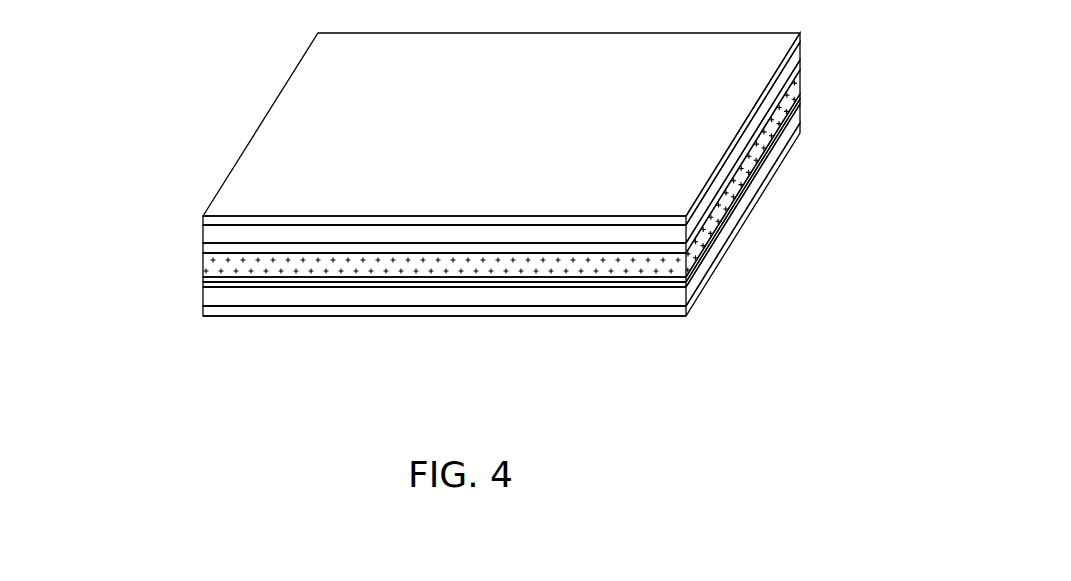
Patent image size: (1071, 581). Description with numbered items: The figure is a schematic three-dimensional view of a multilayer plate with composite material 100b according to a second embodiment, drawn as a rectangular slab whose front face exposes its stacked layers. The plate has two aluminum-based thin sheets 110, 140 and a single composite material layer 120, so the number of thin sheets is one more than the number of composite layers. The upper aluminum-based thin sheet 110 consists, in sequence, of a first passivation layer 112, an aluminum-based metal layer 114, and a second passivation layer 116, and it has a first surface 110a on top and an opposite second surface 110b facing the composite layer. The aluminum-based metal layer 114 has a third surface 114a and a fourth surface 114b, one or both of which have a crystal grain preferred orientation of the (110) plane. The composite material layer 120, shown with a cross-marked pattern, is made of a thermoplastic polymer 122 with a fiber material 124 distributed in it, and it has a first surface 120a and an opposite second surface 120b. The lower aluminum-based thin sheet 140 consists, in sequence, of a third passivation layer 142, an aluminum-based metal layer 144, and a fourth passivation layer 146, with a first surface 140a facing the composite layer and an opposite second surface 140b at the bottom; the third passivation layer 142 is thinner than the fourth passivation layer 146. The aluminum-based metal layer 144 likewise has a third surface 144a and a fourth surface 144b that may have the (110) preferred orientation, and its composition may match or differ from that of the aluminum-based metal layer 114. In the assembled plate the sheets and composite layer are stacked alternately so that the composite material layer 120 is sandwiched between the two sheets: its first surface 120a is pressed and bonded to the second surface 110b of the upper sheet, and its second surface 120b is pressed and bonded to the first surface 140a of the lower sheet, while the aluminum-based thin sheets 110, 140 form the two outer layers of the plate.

The multilayer plate with composite material 100b is at (240, 38).
The aluminum-based thin sheet 110 is at (110, 117).
The first surface 110a is at (300, 216).
The second surface 110b is at (264, 253).
The first passivation layer 112 is at (270, 222).
The aluminum-based metal layer 114 is at (252, 235).
The third surface 114a is at (385, 225).
The fourth surface 114b is at (335, 243).
The second passivation layer 116 is at (240, 248).
The composite material layer 120 is at (110, 218).
The first surface 120a is at (668, 253).
The second surface 120b is at (660, 282).
The thermoplastic polymer 122 is at (207, 258).
The fiber material 124 is at (207, 279).
The aluminum-based thin sheet 140 is at (110, 317).
The first surface 140a is at (590, 282).
The second surface 140b is at (665, 316).
The third passivation layer 142 is at (207, 284).
The aluminum-based metal layer 144 is at (213, 297).
The third surface 144a is at (467, 288).
The fourth surface 144b is at (530, 306).
The fourth passivation layer 146 is at (232, 307).